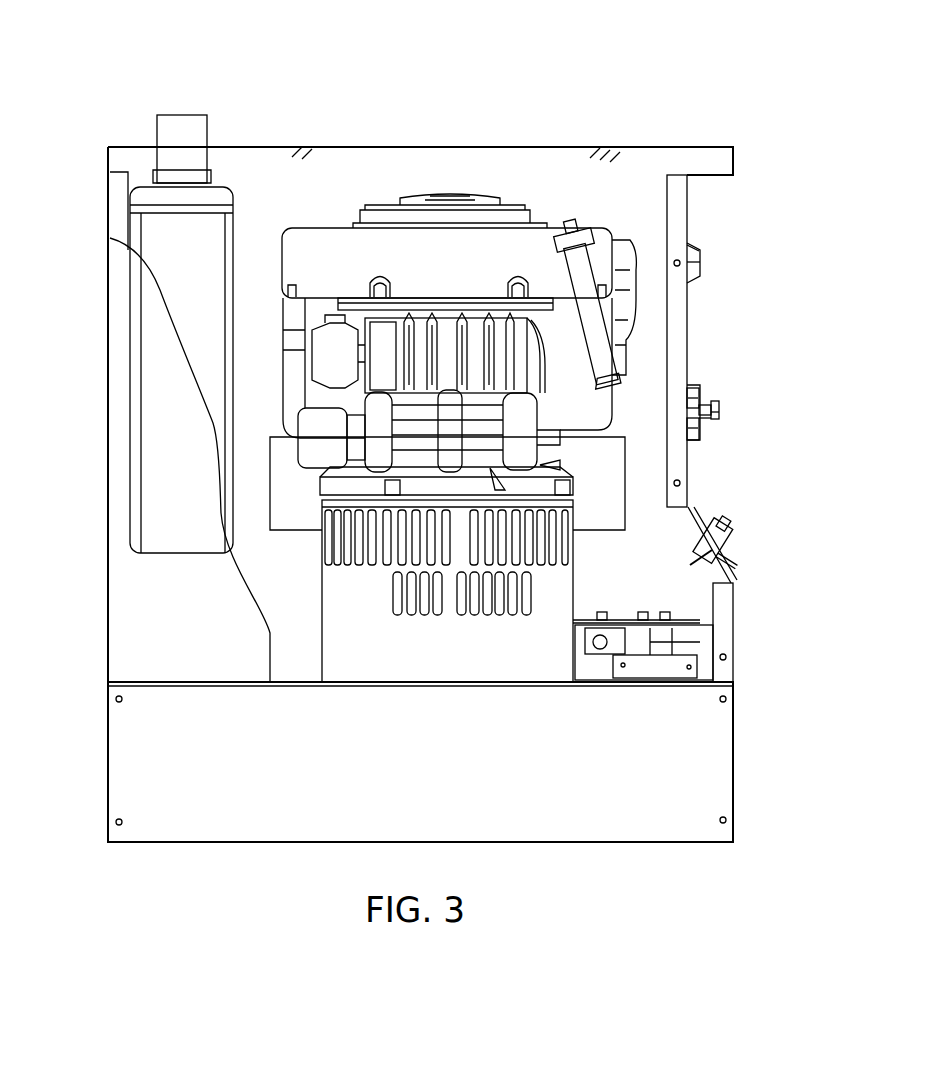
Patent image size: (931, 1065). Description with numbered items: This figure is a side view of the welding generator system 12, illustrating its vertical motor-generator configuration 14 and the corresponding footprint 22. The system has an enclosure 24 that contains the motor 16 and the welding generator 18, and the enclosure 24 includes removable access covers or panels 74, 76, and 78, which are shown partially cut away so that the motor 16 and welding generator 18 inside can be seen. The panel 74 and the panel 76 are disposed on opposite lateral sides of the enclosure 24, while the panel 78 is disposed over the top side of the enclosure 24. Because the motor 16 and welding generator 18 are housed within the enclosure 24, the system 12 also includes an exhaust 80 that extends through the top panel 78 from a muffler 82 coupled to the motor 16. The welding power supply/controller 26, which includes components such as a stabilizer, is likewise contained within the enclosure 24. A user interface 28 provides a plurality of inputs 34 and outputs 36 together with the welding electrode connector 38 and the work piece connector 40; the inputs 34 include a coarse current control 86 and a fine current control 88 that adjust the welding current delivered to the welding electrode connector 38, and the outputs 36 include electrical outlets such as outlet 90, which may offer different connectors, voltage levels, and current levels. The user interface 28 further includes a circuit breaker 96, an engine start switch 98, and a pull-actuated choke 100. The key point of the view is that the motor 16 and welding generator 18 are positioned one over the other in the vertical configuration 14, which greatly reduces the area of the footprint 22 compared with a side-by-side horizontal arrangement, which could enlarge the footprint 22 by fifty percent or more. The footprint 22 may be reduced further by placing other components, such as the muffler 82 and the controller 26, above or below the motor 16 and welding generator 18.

The welding generator system 12 is at (250, 48).
The vertical motor-generator configuration 14 is at (383, 174).
The motor 16 is at (317, 237).
The welding generator 18 is at (398, 655).
The footprint 22 is at (657, 845).
The enclosure 24 is at (690, 725).
The welding power supply/controller 26 is at (690, 604).
The user interface 28 is at (694, 197).
The inputs 34 is at (720, 281).
The outputs 36 is at (709, 344).
The welding electrode connector 38 is at (725, 528).
The work piece connector 40 is at (701, 557).
The panel 74 is at (147, 526).
The panel 76 is at (597, 162).
The panel 78 is at (487, 147).
The exhaust 80 is at (183, 120).
The muffler 82 is at (157, 211).
The coarse current control 86 is at (703, 260).
The fine current control 88 is at (693, 248).
The electrical outlet 90 is at (699, 394).
The circuit breaker 96 is at (702, 422).
The engine start switch 98 is at (701, 400).
The pull-actuated choke 100 is at (719, 416).